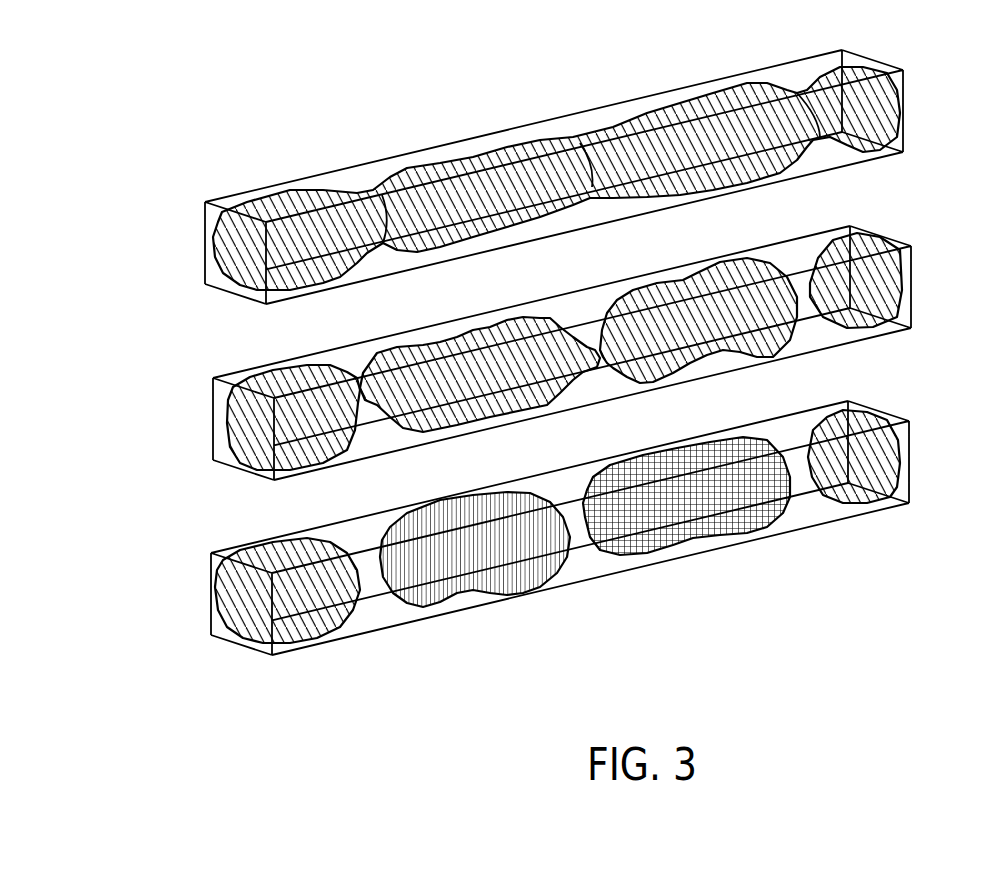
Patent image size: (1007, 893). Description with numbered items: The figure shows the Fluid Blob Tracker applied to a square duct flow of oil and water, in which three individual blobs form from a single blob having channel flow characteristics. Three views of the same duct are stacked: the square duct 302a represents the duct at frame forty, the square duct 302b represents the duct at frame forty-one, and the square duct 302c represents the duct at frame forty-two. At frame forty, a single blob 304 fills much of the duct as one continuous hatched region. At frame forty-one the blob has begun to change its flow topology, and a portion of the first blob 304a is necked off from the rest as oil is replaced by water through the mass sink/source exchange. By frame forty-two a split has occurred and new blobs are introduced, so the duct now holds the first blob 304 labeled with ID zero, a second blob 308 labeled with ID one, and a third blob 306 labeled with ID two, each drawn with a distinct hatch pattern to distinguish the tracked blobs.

The square duct 302a is at (200, 255).
The square duct 302b is at (207, 391).
The square duct 302c is at (200, 586).
The first blob 304 is at (902, 108).
The portion of the first blob 304a is at (485, 330).
The third blob 306 is at (518, 578).
The second blob 308 is at (787, 528).